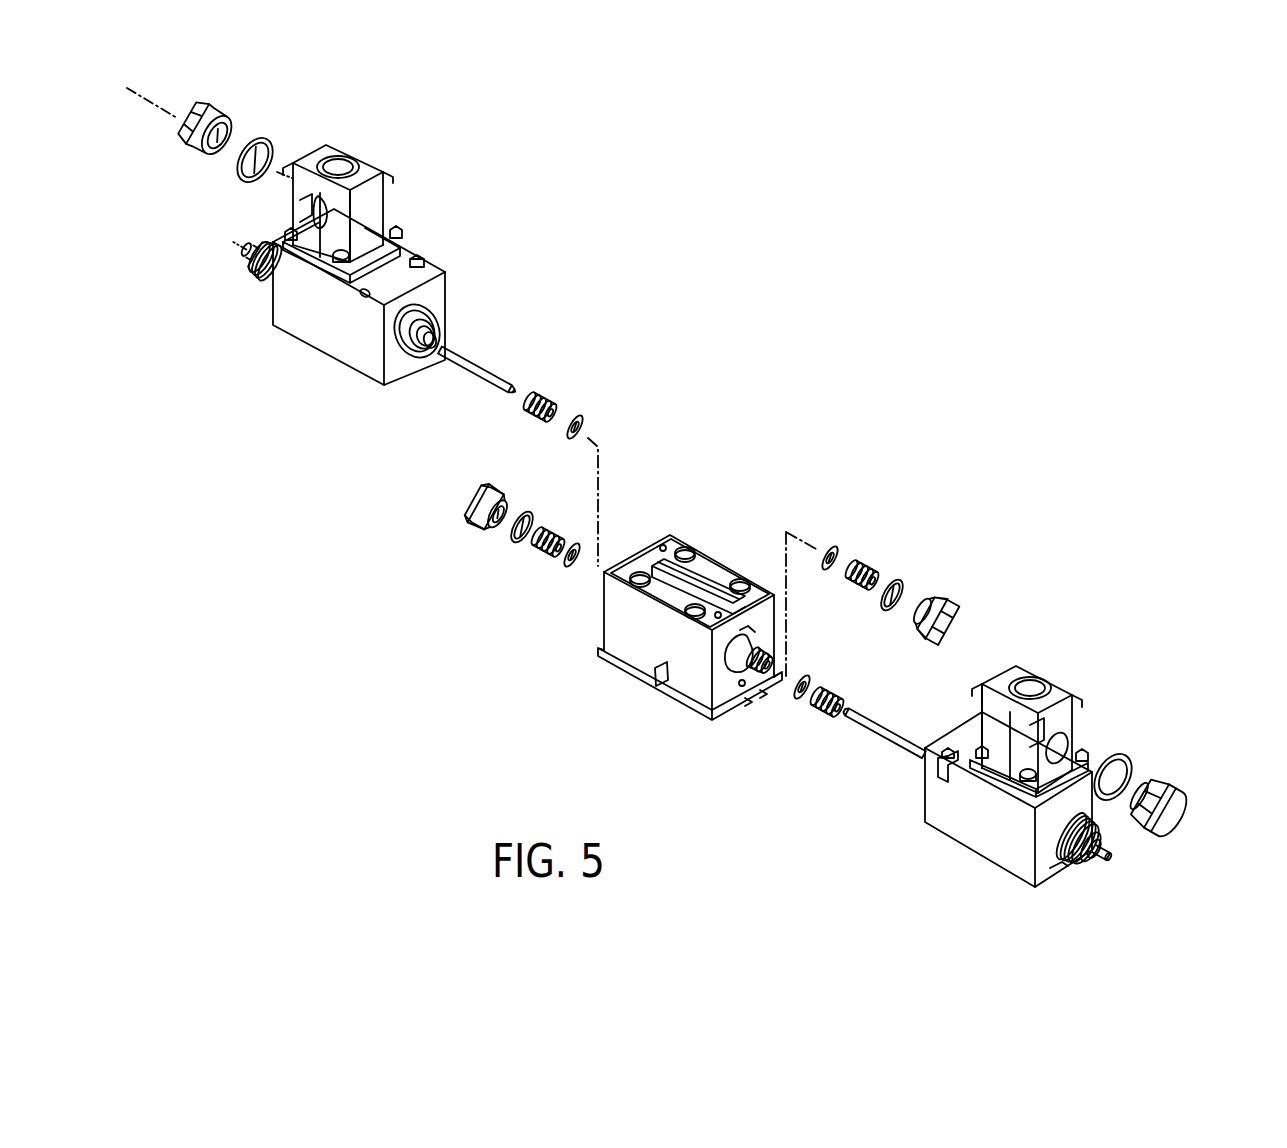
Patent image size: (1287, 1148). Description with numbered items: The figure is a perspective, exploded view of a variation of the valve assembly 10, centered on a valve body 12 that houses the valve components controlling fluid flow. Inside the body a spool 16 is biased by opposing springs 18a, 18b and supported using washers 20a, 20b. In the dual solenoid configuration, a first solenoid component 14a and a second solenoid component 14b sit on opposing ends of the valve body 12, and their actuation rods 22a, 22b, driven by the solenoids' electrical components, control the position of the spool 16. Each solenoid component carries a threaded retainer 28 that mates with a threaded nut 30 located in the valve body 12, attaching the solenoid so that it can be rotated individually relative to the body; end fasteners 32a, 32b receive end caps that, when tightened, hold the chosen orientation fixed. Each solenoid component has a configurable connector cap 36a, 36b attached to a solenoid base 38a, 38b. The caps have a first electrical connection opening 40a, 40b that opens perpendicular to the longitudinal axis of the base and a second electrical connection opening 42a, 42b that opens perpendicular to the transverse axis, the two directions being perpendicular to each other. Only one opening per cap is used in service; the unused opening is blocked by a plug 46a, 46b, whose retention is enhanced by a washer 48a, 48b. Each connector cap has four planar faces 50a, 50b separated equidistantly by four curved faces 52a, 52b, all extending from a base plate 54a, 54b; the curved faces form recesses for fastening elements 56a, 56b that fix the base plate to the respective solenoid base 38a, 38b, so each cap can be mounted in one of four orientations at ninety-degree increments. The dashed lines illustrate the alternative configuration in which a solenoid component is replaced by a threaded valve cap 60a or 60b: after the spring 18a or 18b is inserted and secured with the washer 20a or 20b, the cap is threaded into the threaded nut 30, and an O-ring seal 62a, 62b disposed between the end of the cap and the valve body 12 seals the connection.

The valve assembly 10 is at (368, 683).
The valve body 12 is at (665, 636).
The first solenoid component 14a is at (960, 878).
The second solenoid component 14b is at (283, 383).
The spool 16 is at (768, 668).
The spring 18a is at (864, 563).
The spring 18b is at (545, 400).
The washer 20a is at (830, 546).
The washer 20b is at (578, 414).
The actuation rod 22a is at (882, 736).
The actuation rod 22b is at (462, 378).
The threaded retainer 28 is at (440, 337).
The threaded nut 30 is at (740, 665).
The end fastener 32a is at (1088, 878).
The end fastener 32b is at (258, 266).
The connector cap 36a is at (1056, 676).
The connector cap 36b is at (368, 161).
The solenoid base 38a is at (946, 808).
The solenoid base 38b is at (285, 315).
The first electrical connection opening 40a is at (1028, 688).
The first electrical connection opening 40b is at (333, 168).
The second electrical connection opening 42a is at (1063, 747).
The second electrical connection opening 42b is at (300, 205).
The plug 46a is at (1173, 812).
The plug 46b is at (186, 118).
The washer 48a is at (1133, 767).
The washer 48b is at (238, 165).
The planar face 50a is at (985, 727).
The planar face 50b is at (372, 196).
The curved face 52a is at (1030, 726).
The curved face 52b is at (343, 200).
The base plate 54a is at (1062, 862).
The base plate 54b is at (422, 259).
The fastening element 56a is at (1028, 780).
The fastening element 56b is at (341, 262).
The threaded valve cap 60a is at (936, 594).
The threaded valve cap 60b is at (466, 500).
The O-ring seal 62a is at (893, 580).
The O-ring seal 62b is at (510, 542).